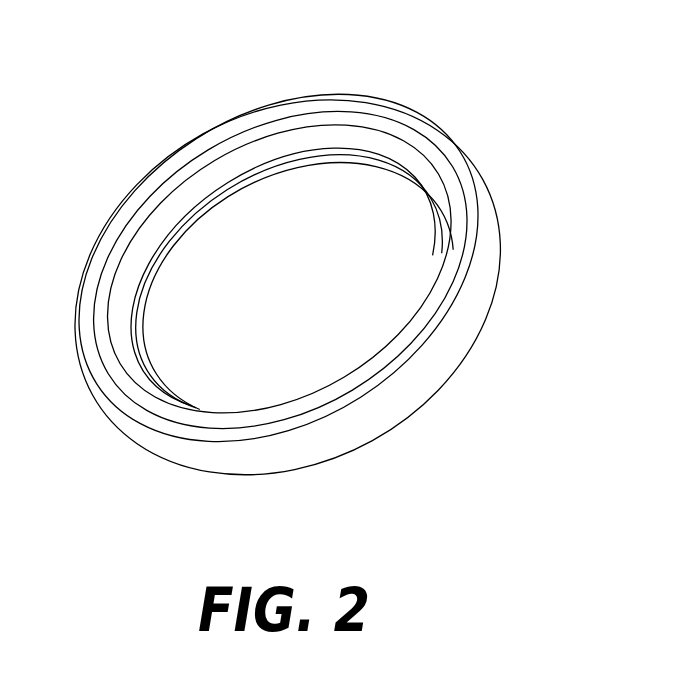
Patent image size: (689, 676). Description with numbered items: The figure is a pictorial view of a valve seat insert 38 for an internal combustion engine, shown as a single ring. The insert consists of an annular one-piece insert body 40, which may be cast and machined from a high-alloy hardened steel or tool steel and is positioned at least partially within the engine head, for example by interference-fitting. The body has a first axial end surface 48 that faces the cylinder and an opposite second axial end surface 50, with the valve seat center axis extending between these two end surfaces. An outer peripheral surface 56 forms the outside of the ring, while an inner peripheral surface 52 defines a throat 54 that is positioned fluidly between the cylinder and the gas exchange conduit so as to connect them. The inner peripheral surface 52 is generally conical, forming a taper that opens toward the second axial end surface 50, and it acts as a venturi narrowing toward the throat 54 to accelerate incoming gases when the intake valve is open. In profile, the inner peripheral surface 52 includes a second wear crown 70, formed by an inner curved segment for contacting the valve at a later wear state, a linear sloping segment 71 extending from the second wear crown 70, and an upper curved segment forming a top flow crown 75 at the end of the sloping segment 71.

The valve seat insert 38 is at (541, 182).
The insert body 40 is at (497, 304).
The first axial end surface 48 is at (393, 437).
The second axial end surface 50 is at (245, 111).
The inner peripheral surface 52 is at (366, 177).
The throat 54 is at (311, 305).
The outer peripheral surface 56 is at (480, 276).
The second wear crown 70 is at (232, 186).
The sloping segment 71 is at (130, 260).
The top flow crown 75 is at (312, 121).